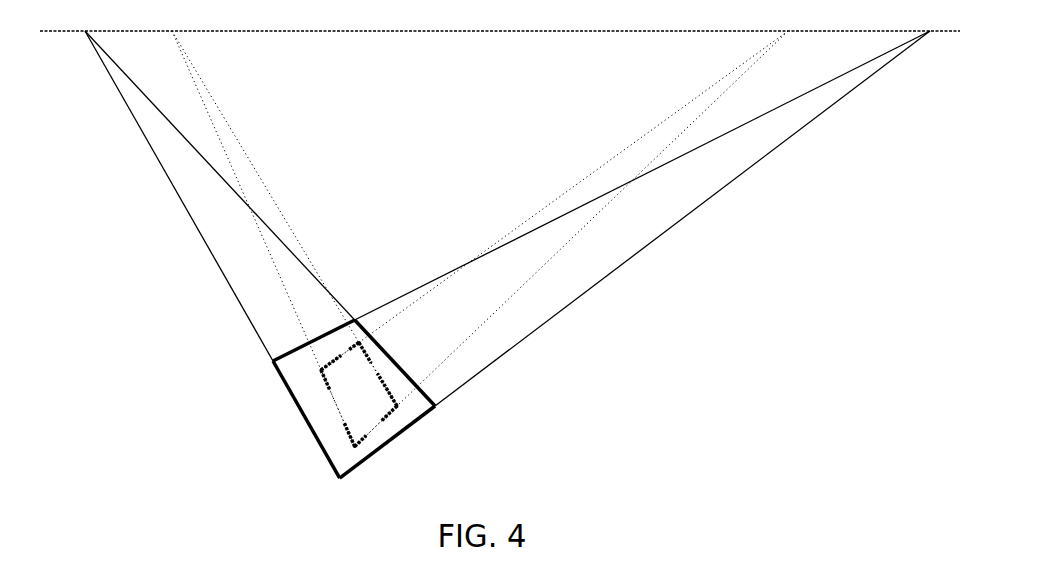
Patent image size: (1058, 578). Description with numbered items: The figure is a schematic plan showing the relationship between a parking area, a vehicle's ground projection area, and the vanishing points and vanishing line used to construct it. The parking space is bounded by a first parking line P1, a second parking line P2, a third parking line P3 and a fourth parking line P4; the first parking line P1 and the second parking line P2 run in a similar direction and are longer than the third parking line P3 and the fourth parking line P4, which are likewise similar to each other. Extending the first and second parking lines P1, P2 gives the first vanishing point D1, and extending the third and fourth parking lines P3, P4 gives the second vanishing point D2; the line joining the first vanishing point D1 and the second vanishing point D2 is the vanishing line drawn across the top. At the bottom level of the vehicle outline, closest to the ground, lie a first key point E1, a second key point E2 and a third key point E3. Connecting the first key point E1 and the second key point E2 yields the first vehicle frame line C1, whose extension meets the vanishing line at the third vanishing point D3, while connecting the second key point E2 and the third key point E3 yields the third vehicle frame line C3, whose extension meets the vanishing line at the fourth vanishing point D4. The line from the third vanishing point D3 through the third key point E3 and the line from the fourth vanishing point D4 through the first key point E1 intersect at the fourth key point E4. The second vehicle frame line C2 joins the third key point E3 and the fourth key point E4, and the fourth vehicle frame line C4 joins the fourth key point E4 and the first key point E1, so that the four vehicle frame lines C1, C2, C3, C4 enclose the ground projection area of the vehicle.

The first parking line vanishing point D1 is at (257, 211).
The second parking line vanishing point D2 is at (606, 211).
The first vehicle vanishing point D3 is at (281, 231).
The second vehicle vanishing point D4 is at (559, 231).
The first parking line P1 is at (306, 433).
The second parking line P2 is at (395, 363).
The third parking line P3 is at (324, 287).
The fourth parking line P4 is at (401, 442).
The first vehicle frame line C1 is at (318, 416).
The second vehicle frame line C2 is at (395, 375).
The third vehicle frame line C3 is at (356, 306).
The fourth vehicle frame line C4 is at (401, 446).
The first outline key point E1 is at (376, 464).
The second outline key point E2 is at (294, 397).
The third outline key point E3 is at (382, 307).
The fourth outline key point E4 is at (433, 425).